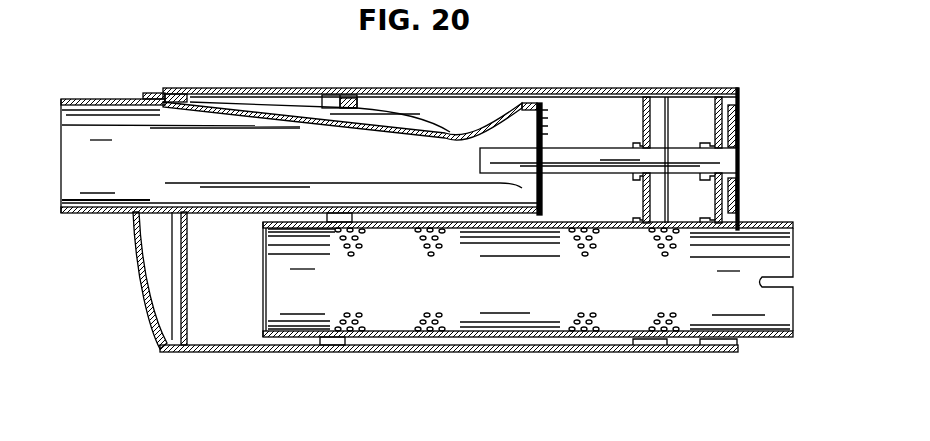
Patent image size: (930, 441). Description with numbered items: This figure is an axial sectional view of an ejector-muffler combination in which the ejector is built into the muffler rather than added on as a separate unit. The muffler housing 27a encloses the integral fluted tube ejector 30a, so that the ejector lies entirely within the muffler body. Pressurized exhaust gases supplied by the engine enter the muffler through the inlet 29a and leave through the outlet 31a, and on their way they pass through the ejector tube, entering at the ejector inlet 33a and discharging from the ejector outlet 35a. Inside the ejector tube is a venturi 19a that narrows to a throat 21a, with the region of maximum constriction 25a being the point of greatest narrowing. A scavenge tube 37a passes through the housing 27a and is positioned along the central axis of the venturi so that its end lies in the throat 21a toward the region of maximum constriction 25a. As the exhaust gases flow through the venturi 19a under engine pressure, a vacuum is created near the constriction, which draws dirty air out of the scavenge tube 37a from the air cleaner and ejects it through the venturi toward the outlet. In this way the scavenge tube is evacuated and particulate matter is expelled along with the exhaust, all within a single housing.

The venturi 19a is at (431, 124).
The throat 21a is at (446, 157).
The region of maximum constriction 25a is at (462, 132).
The muffler housing 27a is at (500, 86).
The inlet 29a is at (792, 337).
The integral fluted tube ejector 30a is at (237, 107).
The outlet 31a is at (131, 214).
The ejector inlet 33a is at (542, 108).
The ejector outlet 35a is at (58, 107).
The scavenge tube 37a is at (607, 157).